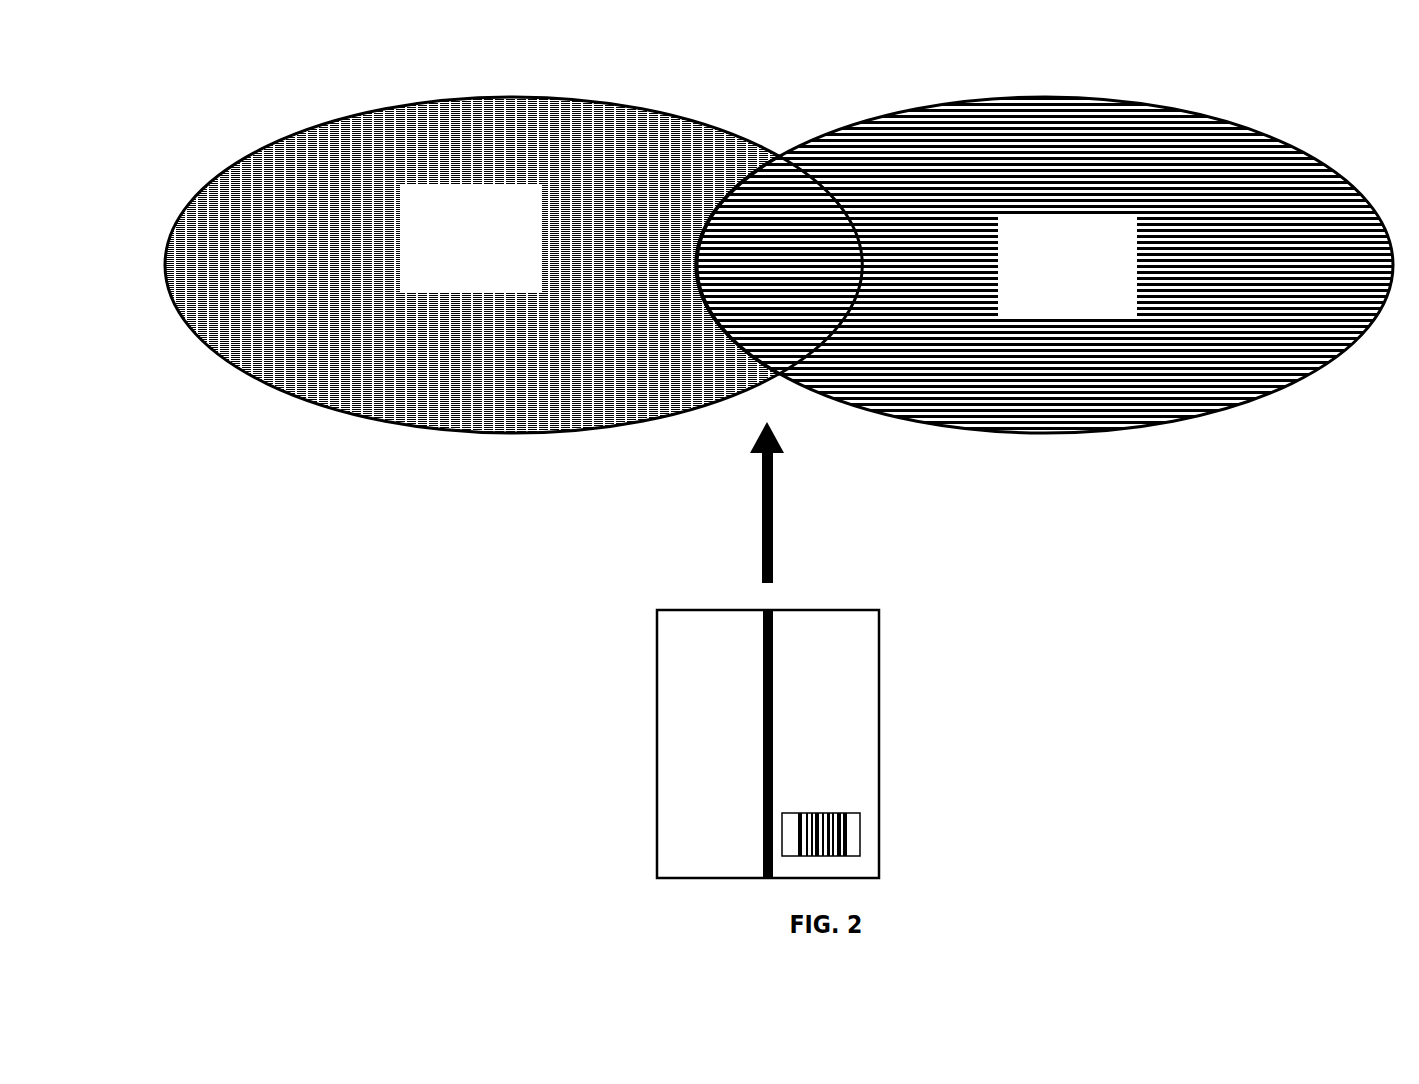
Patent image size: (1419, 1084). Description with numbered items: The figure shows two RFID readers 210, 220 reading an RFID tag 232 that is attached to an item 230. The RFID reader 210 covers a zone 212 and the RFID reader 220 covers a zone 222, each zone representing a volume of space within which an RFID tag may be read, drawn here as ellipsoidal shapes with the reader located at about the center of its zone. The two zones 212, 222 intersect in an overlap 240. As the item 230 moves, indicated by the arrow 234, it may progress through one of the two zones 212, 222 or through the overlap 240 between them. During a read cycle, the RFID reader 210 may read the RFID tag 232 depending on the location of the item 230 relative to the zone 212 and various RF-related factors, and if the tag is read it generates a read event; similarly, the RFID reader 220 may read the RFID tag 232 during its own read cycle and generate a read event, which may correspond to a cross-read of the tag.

The RFID reader 210 is at (471, 238).
The zone 212 is at (450, 428).
The RFID reader 220 is at (1067, 266).
The zone 222 is at (1102, 430).
The item 230 is at (880, 743).
The RFID tag 232 is at (858, 852).
The direction of travel arrow 234 is at (773, 555).
The overlap 240 is at (777, 233).